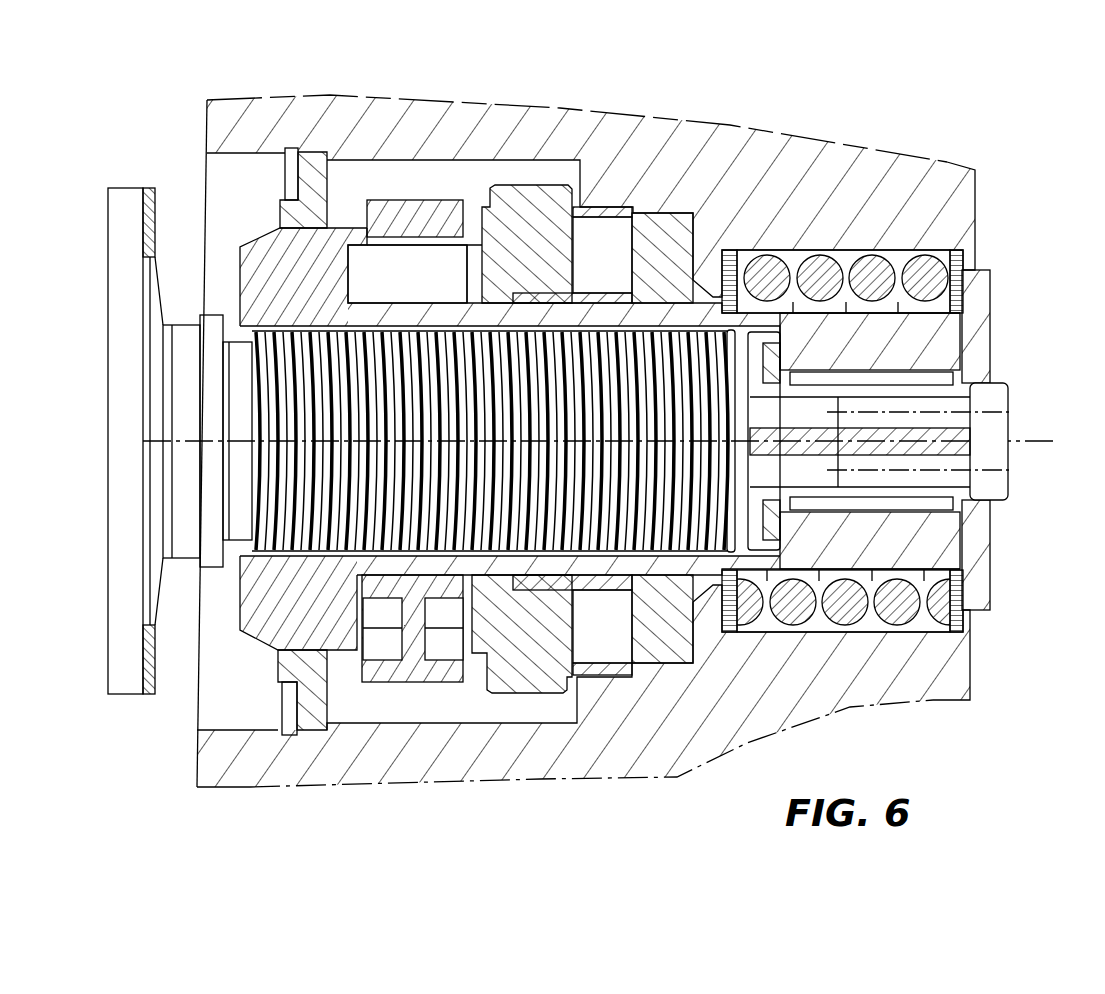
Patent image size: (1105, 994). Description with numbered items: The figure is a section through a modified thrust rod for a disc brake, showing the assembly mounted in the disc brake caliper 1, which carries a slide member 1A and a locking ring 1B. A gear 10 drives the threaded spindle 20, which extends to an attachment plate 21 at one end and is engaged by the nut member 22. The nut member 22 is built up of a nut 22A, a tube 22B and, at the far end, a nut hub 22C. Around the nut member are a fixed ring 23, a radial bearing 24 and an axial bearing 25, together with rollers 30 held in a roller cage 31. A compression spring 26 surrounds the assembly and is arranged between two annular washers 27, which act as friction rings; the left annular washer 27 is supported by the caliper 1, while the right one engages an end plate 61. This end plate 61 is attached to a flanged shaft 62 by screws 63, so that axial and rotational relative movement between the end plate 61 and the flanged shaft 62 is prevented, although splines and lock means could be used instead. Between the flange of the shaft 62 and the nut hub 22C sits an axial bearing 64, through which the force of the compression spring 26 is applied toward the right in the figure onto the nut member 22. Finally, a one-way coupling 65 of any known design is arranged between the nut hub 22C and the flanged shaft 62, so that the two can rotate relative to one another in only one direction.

The disc brake caliper 1 is at (697, 720).
The slide member 1A is at (313, 733).
The locking ring 1B is at (290, 717).
The gear 10 is at (517, 207).
The spindle 20 is at (313, 317).
The attachment plate 21 is at (132, 227).
The nut member 22 is at (267, 257).
The nut 22A is at (297, 610).
The tube 22B is at (678, 565).
The nut hub 22C is at (908, 700).
The fixed ring 23 is at (660, 237).
The radial bearing 24 is at (540, 297).
The axial bearing 25 is at (597, 240).
The compression spring 26 is at (818, 263).
The annular washer 27 is at (725, 247).
The rollers 30 is at (380, 257).
The roller cage 31 is at (433, 213).
The end plate 61 is at (968, 303).
The flanged shaft 62 is at (887, 390).
The screws 63 is at (993, 460).
The axial bearing 64 is at (770, 575).
The one-way coupling 65 is at (853, 505).